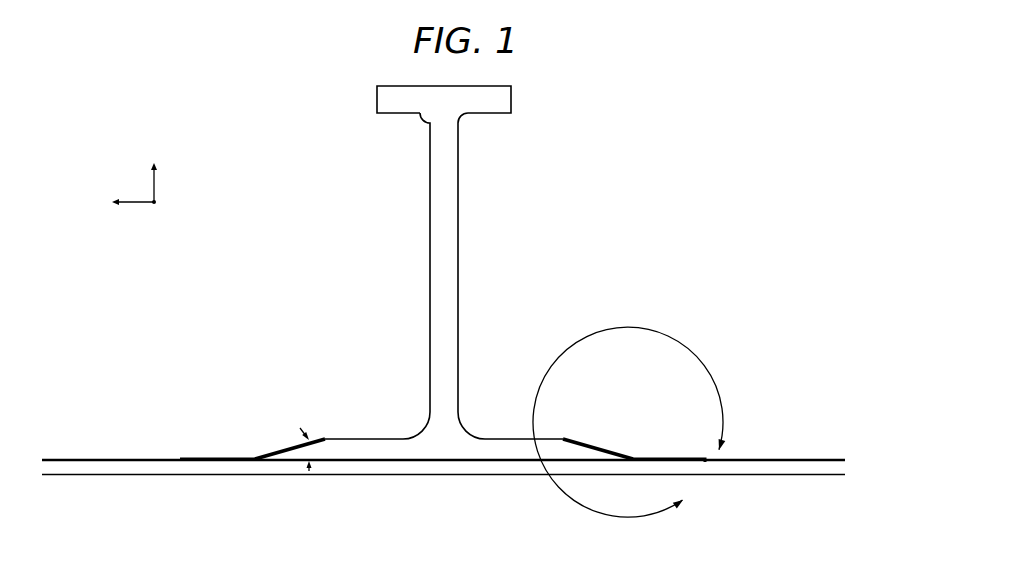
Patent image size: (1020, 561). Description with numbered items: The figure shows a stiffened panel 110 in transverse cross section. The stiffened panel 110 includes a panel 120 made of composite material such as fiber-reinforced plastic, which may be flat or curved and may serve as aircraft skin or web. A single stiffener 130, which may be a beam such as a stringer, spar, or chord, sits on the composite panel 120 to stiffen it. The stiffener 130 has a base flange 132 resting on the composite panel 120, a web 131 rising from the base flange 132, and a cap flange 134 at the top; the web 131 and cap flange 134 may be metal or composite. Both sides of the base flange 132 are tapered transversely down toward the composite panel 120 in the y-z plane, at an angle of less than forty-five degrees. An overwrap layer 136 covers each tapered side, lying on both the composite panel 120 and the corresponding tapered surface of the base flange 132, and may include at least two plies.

The stiffened panel 110 is at (708, 146).
The composite panel 120 is at (97, 459).
The stiffener 130 is at (420, 271).
The web 131 is at (458, 192).
The base flange 132 is at (370, 439).
The cap flange 134 is at (511, 100).
The overwrap layer 136 is at (607, 448).